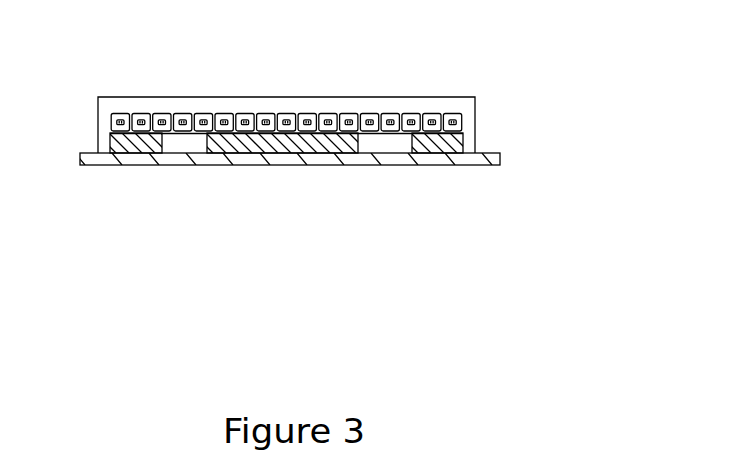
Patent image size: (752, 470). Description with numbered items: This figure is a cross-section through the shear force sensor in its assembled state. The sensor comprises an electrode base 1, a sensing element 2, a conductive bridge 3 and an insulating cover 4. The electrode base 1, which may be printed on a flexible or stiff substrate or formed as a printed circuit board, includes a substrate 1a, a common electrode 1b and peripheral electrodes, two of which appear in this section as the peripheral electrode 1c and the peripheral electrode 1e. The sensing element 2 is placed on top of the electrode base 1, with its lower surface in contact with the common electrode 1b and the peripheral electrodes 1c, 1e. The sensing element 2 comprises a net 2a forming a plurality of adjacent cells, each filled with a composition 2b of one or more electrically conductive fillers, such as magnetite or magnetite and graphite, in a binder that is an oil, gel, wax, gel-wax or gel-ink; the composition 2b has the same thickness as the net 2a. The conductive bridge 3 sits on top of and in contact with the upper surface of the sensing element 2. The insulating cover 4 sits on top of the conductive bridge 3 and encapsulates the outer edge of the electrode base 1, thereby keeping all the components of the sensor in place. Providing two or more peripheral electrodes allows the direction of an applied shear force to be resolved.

The electrode base 1 is at (334, 139).
The substrate 1a is at (400, 157).
The common electrode 1b is at (303, 147).
The peripheral electrode 1c is at (140, 147).
The peripheral electrode 1e is at (450, 153).
The sensing element 2 is at (324, 75).
The net 2a is at (163, 117).
The composition 2b is at (267, 117).
The conductive bridge 3 is at (430, 113).
The insulating cover 4 is at (98, 123).